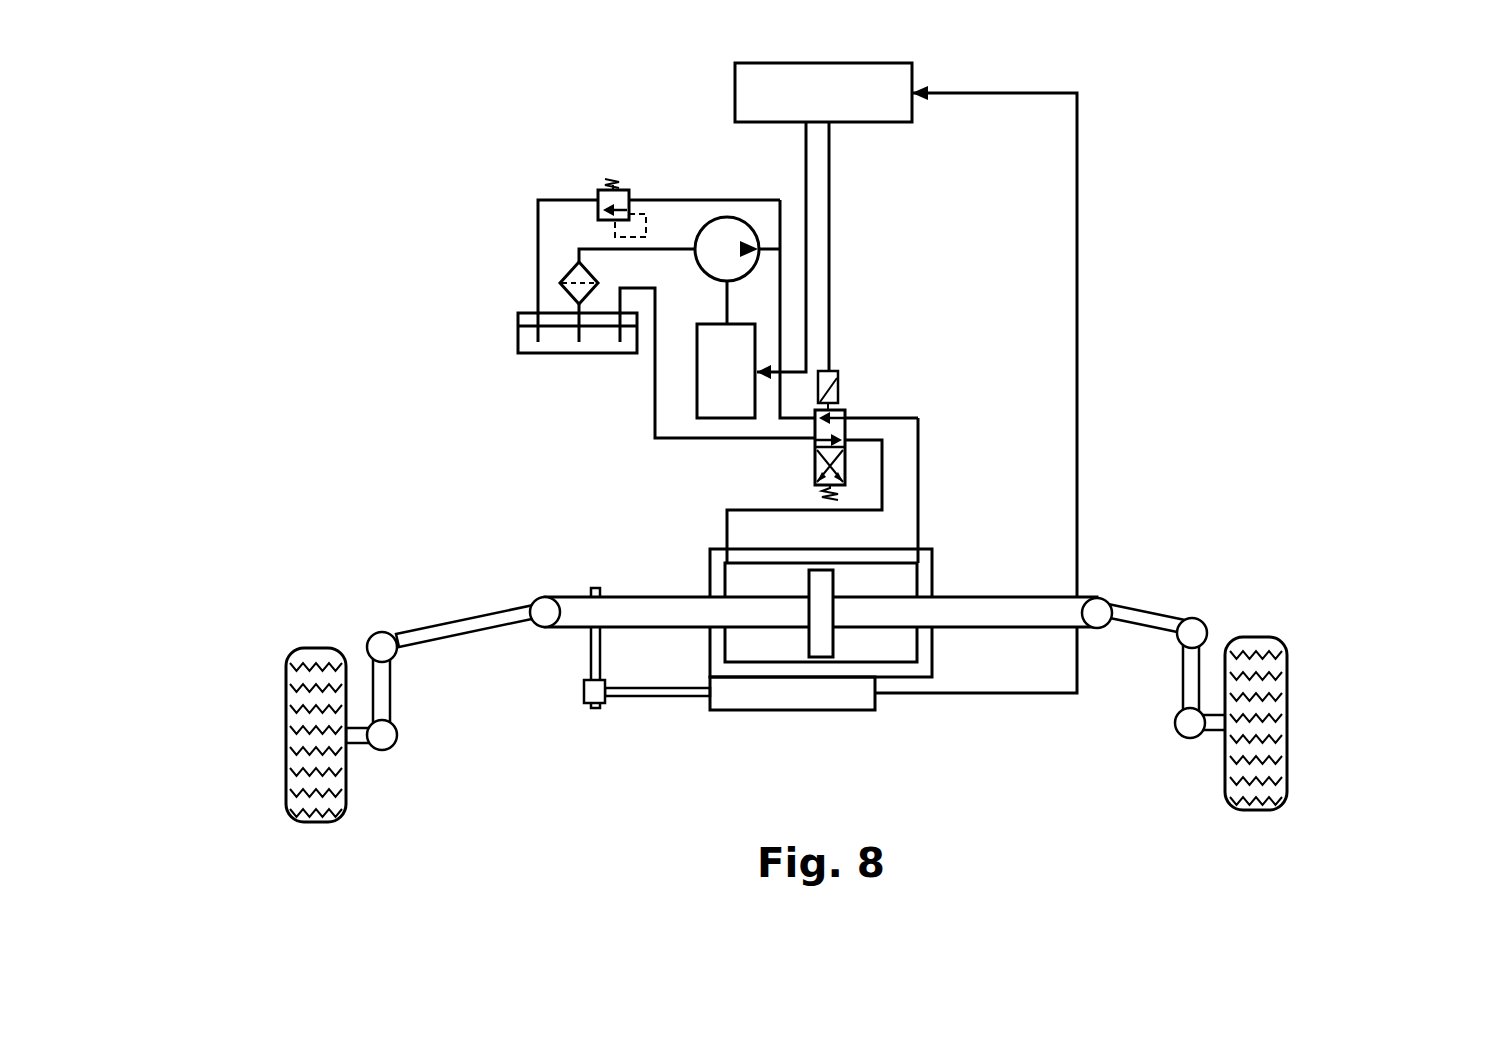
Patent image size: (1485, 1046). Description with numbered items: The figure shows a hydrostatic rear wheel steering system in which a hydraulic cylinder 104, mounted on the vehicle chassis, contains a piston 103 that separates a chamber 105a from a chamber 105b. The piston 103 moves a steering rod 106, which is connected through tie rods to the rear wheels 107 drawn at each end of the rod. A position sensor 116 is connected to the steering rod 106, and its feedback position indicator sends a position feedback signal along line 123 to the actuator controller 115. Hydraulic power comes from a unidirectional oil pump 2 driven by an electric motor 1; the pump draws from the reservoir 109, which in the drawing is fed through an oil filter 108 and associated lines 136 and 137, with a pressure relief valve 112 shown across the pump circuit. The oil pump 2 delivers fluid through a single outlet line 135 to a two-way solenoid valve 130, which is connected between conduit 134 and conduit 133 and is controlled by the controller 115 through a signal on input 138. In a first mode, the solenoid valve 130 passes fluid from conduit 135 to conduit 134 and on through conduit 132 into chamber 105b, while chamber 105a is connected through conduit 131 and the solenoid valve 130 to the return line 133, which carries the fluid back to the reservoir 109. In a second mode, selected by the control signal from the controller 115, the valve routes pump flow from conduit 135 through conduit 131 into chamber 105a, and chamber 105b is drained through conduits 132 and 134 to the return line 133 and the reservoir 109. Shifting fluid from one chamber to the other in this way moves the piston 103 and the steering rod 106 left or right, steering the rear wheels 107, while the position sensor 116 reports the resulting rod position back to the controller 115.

The actuator controller 115 is at (823, 74).
The input 138 is at (830, 203).
The line 123 is at (1128, 87).
The oil pipe 136 is at (538, 228).
The outlet line 135 is at (782, 303).
The pressure relief valve 112 is at (598, 198).
The oil pipe 137 is at (587, 227).
The unidirectional oil pump 2 is at (727, 228).
The oil filter 108 is at (573, 270).
The reservoir 109 is at (522, 343).
The return line 133 is at (708, 440).
The electric motor 1 is at (698, 368).
The solenoid valve 130 is at (812, 465).
The conduit 134 is at (887, 415).
The conduit 132 is at (920, 512).
The conduit 131 is at (725, 520).
The hydraulic cylinder 104 is at (720, 577).
The chamber 105a is at (752, 652).
The chamber 105b is at (883, 652).
The position sensor 116 is at (737, 698).
The steering rod 106 is at (1057, 610).
The piston 103 is at (820, 650).
The rear wheels 107 is at (1252, 663).